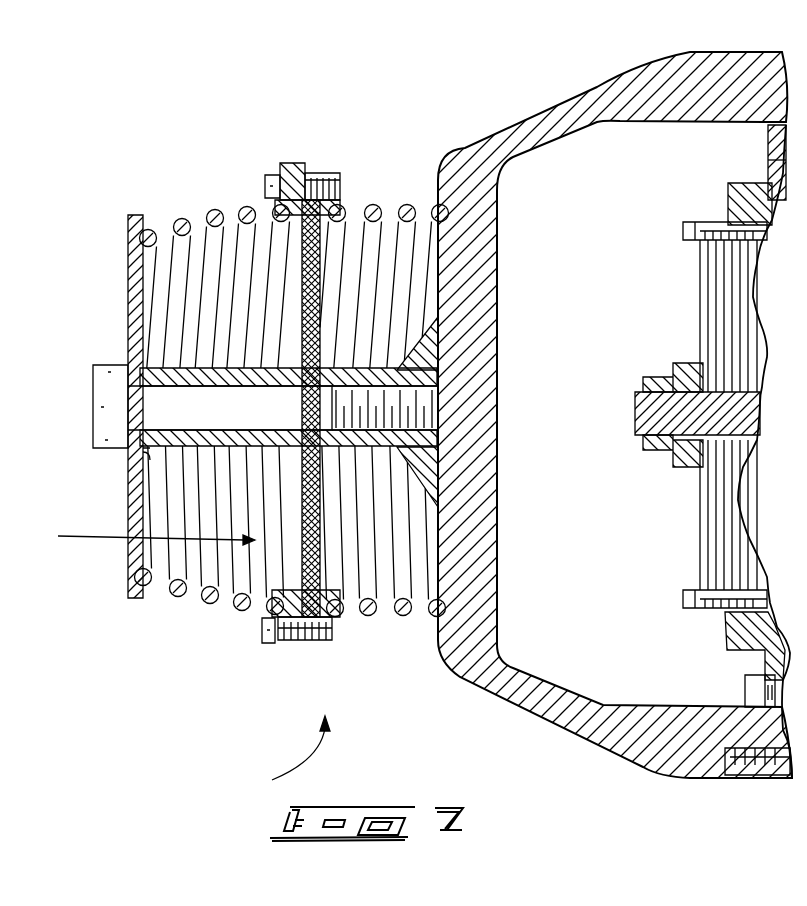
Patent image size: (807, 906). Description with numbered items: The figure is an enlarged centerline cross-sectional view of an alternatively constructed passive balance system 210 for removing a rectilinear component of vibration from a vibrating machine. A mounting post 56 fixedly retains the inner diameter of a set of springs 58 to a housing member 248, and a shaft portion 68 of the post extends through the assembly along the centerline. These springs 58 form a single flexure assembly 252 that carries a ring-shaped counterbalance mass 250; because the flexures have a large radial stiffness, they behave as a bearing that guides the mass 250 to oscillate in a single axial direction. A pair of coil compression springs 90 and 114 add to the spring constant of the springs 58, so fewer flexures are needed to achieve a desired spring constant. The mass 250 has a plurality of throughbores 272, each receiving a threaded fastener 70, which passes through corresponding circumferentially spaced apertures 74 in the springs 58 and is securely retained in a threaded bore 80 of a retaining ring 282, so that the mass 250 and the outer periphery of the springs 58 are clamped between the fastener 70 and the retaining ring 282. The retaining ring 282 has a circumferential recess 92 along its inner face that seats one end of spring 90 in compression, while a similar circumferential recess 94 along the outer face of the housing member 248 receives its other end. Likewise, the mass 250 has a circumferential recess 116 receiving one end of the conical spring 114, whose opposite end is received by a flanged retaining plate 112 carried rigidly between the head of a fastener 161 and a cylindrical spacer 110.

The mounting post 56 is at (293, 382).
The springs 58 is at (290, 563).
The shaft 68 is at (205, 440).
The threaded fastener 70 is at (265, 188).
The apertures 74 is at (308, 641).
The threaded bores 80 is at (342, 195).
The coil compression spring 90 is at (373, 208).
The circumferential recess 92 is at (338, 614).
The circumferential recess 94 is at (435, 614).
The cylindrical spacer 110 is at (143, 462).
The retaining plate 112 is at (128, 283).
The conical spring 114 is at (172, 212).
The circumferential recess 116 is at (272, 615).
The fastener 161 is at (106, 418).
The passive balance system 210 is at (276, 755).
The housing member 248 is at (520, 707).
The counterbalance mass 250 is at (213, 216).
The flexure assembly 252 is at (130, 537).
The throughbores 272 is at (272, 648).
The retaining ring 282 is at (327, 177).